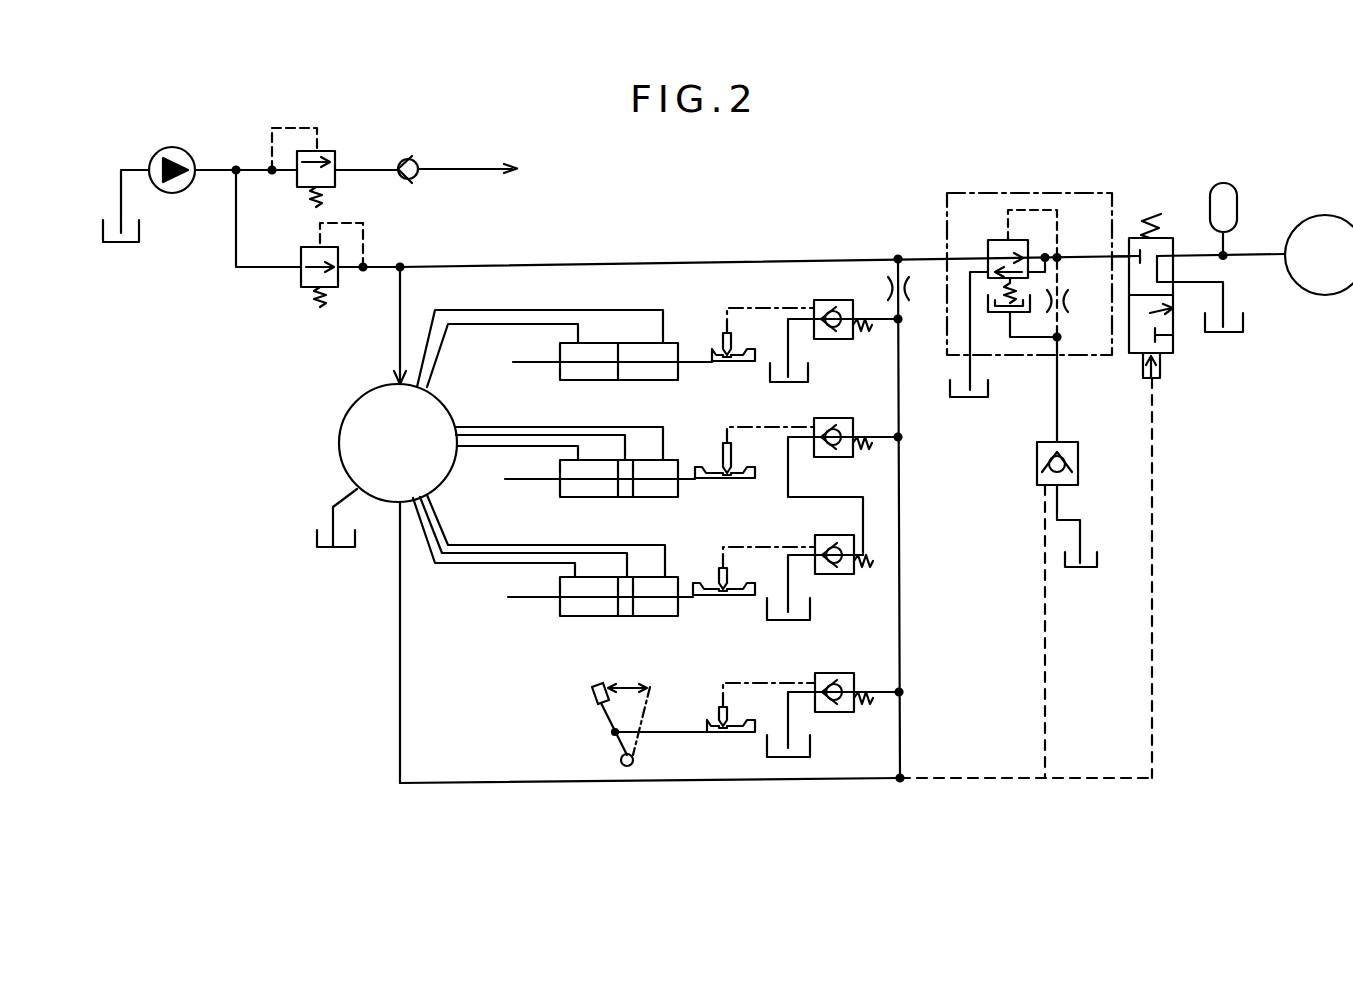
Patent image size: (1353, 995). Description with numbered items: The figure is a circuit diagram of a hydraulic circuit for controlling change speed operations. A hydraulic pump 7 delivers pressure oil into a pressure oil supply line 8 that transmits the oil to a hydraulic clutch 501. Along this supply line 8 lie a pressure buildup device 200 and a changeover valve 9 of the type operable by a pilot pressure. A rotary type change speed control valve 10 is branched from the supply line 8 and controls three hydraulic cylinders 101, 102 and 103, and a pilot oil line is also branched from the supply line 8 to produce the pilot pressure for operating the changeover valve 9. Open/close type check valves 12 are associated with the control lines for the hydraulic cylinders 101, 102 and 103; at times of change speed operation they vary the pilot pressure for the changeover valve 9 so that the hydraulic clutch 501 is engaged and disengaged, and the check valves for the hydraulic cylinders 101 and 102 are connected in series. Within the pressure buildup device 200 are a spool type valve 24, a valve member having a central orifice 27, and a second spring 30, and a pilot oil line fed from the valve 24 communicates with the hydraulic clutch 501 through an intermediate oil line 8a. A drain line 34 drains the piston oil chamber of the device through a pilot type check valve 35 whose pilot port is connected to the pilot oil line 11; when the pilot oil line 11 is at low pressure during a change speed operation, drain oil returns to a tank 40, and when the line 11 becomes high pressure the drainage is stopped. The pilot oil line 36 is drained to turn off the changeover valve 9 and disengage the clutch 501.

The hydraulic pump 7 is at (183, 150).
The pressure oil supply line 8 is at (562, 263).
The intermediate oil line 8a is at (1120, 256).
The changeover valve 9 is at (1173, 343).
The rotary type change speed control valve 10 is at (398, 443).
The pilot oil line 11 is at (900, 513).
The open/close type check valve 12 is at (842, 339).
The spool type valve 24 is at (998, 240).
The orifice 27 is at (1045, 308).
The second spring 30 is at (1000, 283).
The drain line 34 is at (1060, 508).
The pilot type check valve 35 is at (1037, 470).
The pilot oil line 36 is at (998, 777).
The tank 40 is at (1093, 567).
The hydraulic cylinder 101 is at (597, 497).
The hydraulic cylinder 102 is at (595, 616).
The hydraulic cylinder 103 is at (597, 380).
The pressure buildup device 200 is at (947, 205).
The hydraulic clutch 501 is at (1319, 255).